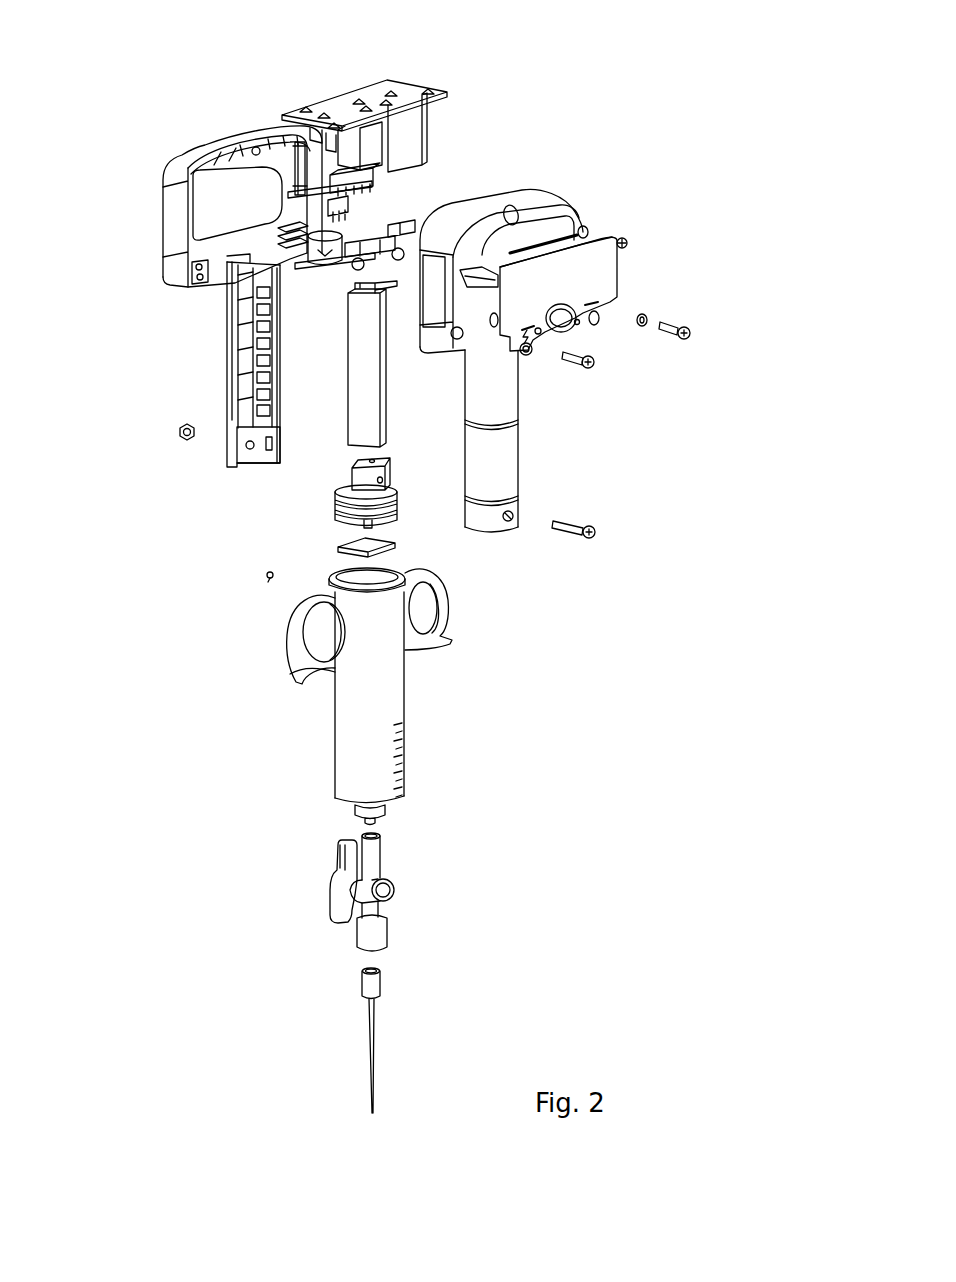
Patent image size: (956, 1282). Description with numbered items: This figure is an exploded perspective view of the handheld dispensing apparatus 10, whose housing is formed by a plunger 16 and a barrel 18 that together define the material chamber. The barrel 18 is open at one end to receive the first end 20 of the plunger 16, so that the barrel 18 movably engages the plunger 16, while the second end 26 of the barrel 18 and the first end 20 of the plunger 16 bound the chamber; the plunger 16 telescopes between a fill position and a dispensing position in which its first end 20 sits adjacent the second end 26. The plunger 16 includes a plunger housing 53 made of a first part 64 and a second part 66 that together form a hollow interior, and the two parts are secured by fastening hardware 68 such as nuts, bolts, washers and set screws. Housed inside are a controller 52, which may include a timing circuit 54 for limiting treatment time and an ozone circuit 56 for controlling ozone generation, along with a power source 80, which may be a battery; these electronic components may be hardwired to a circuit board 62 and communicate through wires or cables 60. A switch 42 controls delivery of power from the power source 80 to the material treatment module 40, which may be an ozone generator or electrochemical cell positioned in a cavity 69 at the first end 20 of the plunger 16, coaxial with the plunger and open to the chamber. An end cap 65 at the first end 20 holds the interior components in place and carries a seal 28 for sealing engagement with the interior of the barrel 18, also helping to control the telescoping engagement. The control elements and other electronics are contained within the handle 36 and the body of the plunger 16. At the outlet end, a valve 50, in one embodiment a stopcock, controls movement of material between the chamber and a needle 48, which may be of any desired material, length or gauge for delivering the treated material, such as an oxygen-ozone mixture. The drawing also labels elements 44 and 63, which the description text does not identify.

The handheld dispensing apparatus 10 is at (619, 116).
The plunger 16 is at (507, 387).
The barrel 18 is at (393, 688).
The first end of the plunger 20 is at (518, 496).
The second end of the barrel 26 is at (347, 798).
The seal 28 is at (403, 510).
The handle 36 is at (180, 167).
The material treatment module 40 is at (340, 537).
The switch 42 is at (600, 332).
The indicator light 44 is at (607, 300).
The needle 48 is at (375, 1047).
The valve 50 is at (380, 850).
The controller 52 is at (413, 90).
The plunger housing 53 is at (543, 480).
The timing circuit 54 is at (390, 230).
The ozone circuit 56 is at (413, 92).
The wires or cables 60 is at (555, 230).
The circuit board 62 is at (333, 102).
The housing half 63 is at (173, 218).
The first part of the plunger housing 64 is at (230, 397).
The end cap 65 is at (383, 475).
The second part of the plunger housing 66 is at (503, 448).
The fastening hardware 68 is at (700, 328).
The cavity 69 is at (367, 518).
The power source 80 is at (367, 383).